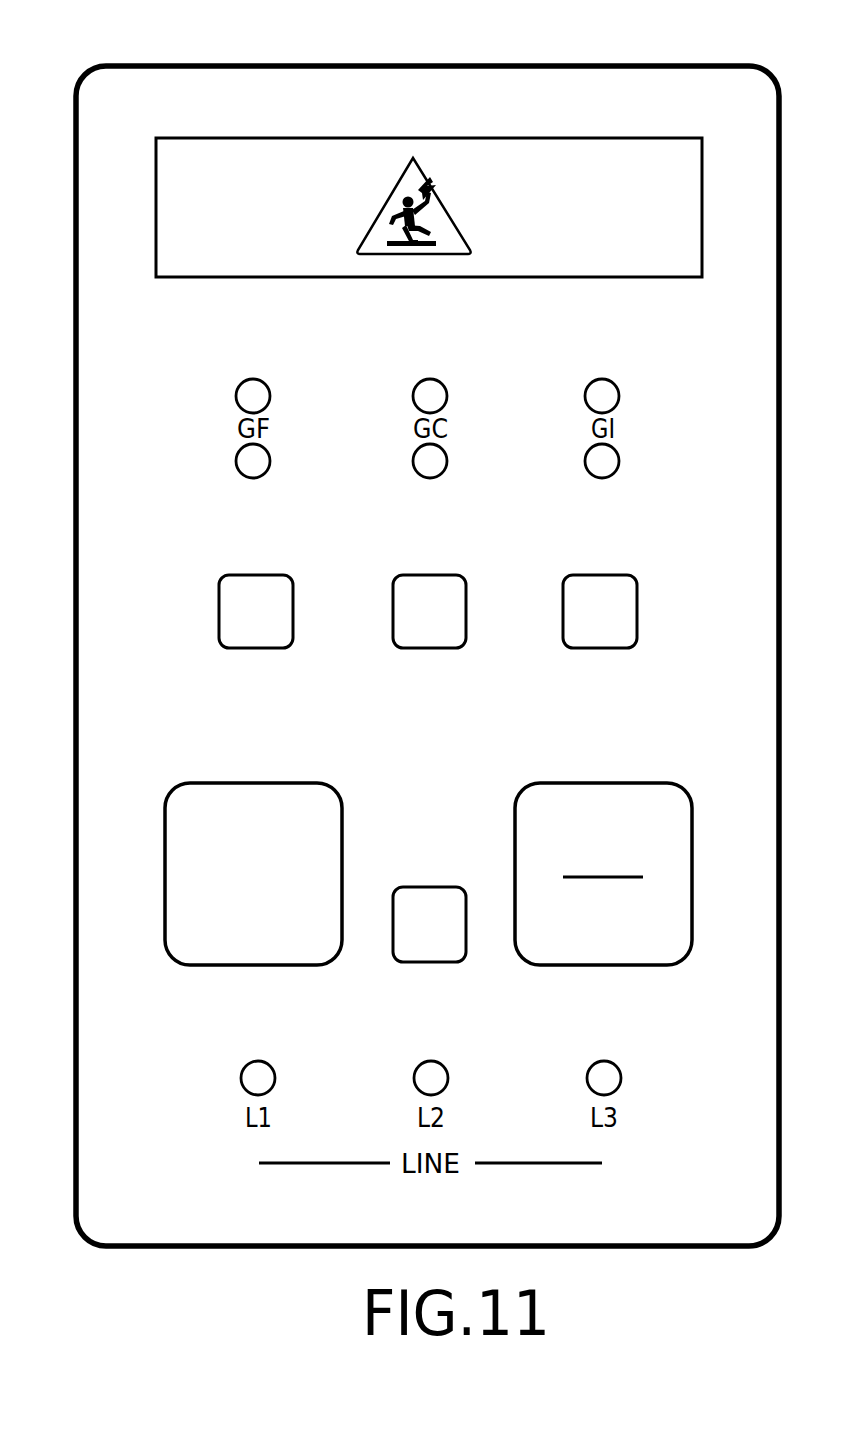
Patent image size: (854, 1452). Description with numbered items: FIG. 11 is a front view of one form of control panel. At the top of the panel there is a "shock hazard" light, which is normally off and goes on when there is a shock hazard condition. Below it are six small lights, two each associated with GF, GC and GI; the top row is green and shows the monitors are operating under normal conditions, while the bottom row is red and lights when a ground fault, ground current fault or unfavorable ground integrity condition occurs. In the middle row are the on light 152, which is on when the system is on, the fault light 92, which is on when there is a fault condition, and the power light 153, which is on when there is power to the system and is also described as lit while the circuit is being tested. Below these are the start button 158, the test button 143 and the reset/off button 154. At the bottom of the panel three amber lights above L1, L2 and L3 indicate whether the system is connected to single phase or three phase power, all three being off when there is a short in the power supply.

The fault light 92 is at (547, 155).
The on light 152 is at (240, 625).
The power light 153 is at (622, 603).
The reset/off button 154 is at (637, 802).
The start button 158 is at (237, 938).
The TEST button 143 is at (438, 948).